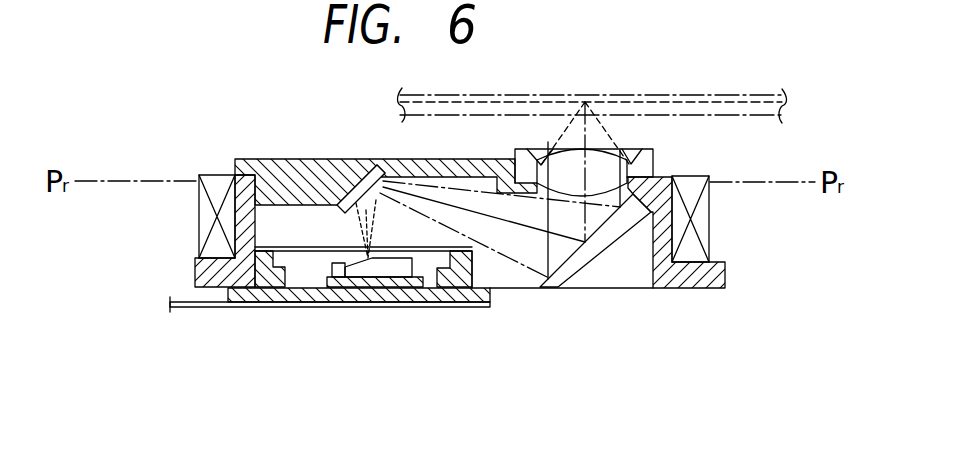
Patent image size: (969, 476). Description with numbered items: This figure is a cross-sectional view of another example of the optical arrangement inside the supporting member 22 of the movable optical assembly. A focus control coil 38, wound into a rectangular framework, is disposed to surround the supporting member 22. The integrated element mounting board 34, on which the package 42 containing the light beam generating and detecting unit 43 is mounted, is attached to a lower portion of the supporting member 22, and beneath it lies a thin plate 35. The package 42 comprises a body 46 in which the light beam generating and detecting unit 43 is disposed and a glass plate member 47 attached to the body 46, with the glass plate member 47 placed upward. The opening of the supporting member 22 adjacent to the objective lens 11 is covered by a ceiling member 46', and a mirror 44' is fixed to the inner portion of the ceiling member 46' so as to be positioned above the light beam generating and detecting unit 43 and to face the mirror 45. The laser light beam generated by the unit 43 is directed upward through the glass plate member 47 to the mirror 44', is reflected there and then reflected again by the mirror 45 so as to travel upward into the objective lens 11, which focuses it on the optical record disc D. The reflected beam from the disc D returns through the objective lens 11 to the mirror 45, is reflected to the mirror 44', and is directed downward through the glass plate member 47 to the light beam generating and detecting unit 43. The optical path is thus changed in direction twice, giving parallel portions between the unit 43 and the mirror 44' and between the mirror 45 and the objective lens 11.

The optical record disc D is at (731, 95).
The objective lens 11 is at (551, 175).
The supporting member 22 is at (705, 280).
The integrated element mounting board 34 is at (441, 295).
The thin base plate 35 is at (197, 310).
The focus control coil 38 is at (203, 232).
The package 42 is at (356, 323).
The light beam generating and detecting unit 43 is at (324, 284).
The mirror 44' is at (361, 165).
The mirror 45 is at (575, 268).
The body 46 is at (359, 308).
The ceiling member 46' is at (386, 157).
The glass plate member 47 is at (300, 258).